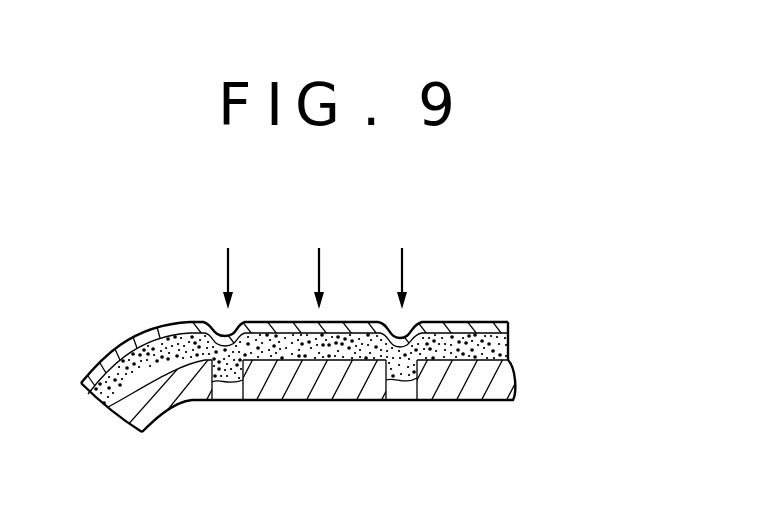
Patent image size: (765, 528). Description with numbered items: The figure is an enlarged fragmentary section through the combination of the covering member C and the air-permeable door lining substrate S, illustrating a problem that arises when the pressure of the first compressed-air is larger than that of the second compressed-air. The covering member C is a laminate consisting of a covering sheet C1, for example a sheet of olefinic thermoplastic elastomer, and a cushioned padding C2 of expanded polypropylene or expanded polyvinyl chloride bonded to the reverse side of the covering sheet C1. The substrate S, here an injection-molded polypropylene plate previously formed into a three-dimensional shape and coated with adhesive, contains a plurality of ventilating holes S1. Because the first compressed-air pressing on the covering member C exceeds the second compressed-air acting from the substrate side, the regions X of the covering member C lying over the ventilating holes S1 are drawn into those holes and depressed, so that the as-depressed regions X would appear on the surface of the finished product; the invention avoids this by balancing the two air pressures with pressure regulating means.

The covering member C is at (360, 296).
The covering sheet C1 is at (509, 327).
The cushioned padding C2 is at (510, 349).
The substrate S is at (532, 386).
The ventilating holes S1 is at (227, 401).
The regions X is at (226, 320).